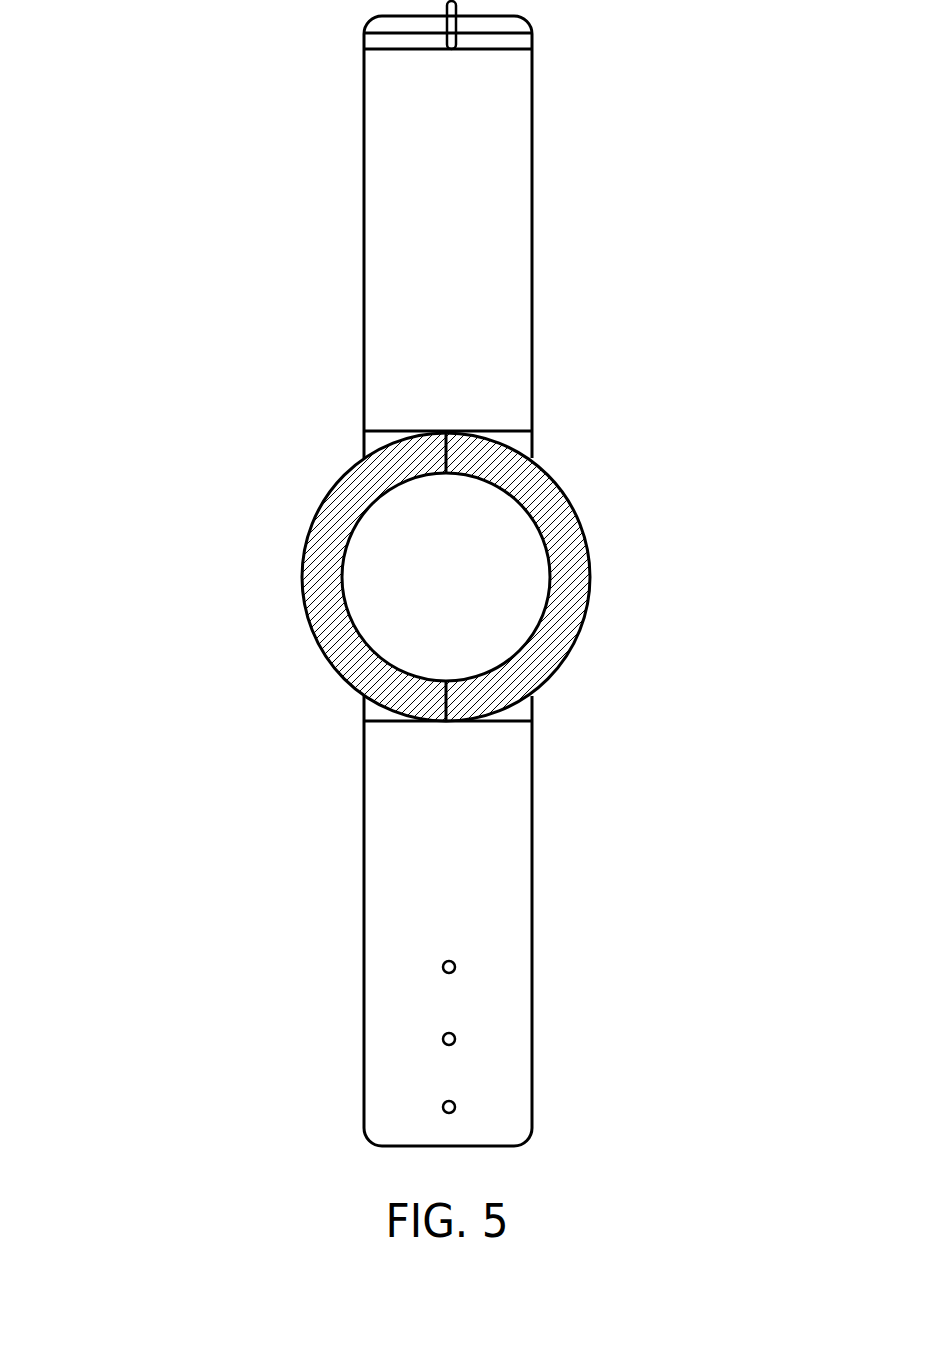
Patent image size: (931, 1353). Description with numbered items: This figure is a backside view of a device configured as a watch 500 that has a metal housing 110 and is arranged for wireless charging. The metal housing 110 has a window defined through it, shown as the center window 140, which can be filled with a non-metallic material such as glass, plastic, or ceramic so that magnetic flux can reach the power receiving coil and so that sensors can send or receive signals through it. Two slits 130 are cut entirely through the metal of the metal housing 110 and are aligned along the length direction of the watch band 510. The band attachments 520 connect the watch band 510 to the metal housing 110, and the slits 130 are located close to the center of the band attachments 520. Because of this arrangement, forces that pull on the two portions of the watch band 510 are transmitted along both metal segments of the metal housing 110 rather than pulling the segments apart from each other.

The watch 500 is at (117, 193).
The watch band 510 is at (363, 993).
The band attachments 520 is at (363, 443).
The slits 130 is at (608, 788).
The center window 140 is at (410, 566).
The metal housing 110 is at (558, 577).